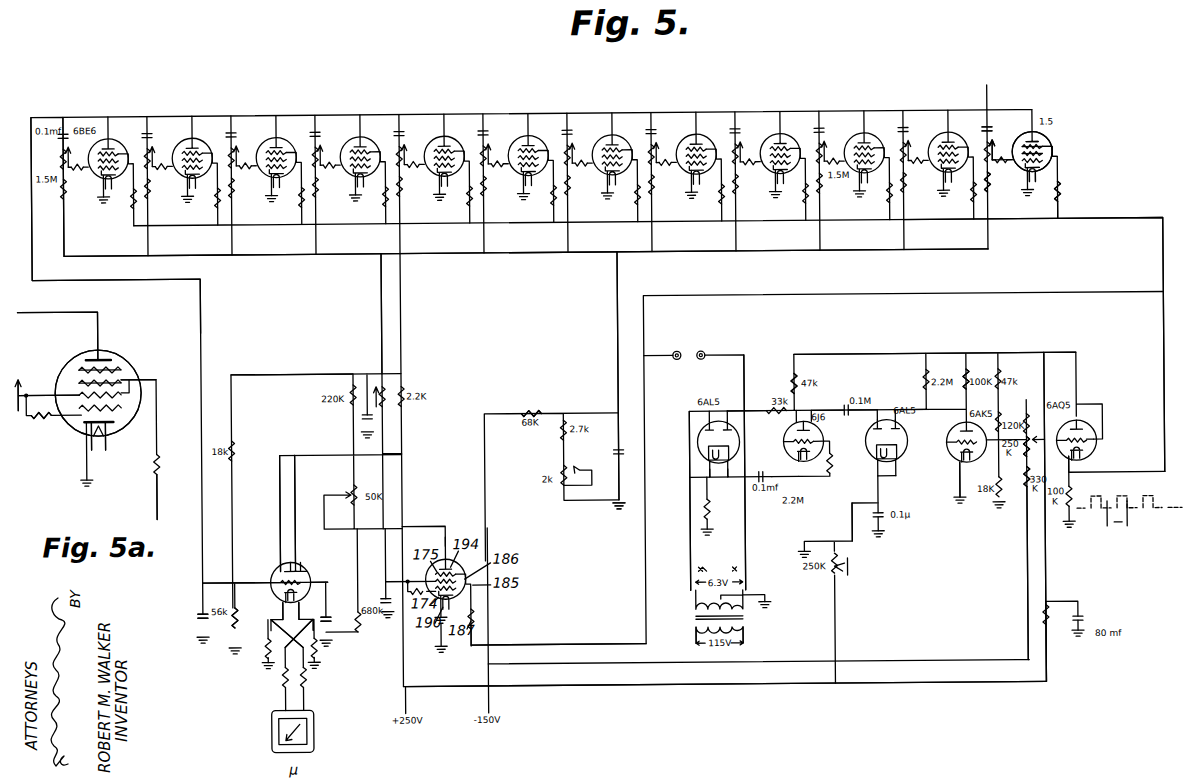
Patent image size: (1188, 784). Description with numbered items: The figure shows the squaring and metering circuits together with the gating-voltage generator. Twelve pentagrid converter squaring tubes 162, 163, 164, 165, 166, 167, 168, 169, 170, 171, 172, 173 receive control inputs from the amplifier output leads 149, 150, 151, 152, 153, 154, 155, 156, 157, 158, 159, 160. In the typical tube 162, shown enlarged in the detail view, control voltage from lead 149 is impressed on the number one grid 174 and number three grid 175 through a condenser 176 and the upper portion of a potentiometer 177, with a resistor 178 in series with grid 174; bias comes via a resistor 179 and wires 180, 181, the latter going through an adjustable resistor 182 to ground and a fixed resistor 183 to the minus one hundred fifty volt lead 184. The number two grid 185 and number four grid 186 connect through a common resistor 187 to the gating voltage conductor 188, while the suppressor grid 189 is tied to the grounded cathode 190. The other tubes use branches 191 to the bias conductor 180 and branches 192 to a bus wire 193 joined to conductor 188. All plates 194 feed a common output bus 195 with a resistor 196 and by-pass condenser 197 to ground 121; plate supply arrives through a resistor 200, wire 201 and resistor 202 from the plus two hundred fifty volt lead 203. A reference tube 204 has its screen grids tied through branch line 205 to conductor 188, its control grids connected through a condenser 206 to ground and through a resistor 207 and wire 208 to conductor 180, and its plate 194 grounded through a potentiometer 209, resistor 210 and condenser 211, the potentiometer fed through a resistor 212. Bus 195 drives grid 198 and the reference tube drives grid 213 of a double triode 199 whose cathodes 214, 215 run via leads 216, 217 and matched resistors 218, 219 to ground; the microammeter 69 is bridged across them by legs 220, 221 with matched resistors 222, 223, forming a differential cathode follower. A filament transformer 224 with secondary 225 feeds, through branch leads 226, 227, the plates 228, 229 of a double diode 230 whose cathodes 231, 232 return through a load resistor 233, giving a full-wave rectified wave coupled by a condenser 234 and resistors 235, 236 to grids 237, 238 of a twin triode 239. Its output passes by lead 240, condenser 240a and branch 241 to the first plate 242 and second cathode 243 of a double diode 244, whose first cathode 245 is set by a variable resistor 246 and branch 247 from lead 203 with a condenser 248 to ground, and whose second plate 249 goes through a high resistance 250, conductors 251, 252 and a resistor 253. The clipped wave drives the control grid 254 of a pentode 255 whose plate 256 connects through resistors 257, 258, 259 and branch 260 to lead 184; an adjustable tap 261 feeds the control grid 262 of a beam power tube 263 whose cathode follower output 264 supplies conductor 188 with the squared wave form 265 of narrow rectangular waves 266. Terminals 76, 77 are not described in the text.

In FIG. 5, the amplifier output lead 160 is at (64, 113).
In FIG. 5, the common output bus 195 is at (76, 113).
In FIG. 5A, the common output bus 195 is at (78, 312).
In FIG. 5, the pentagrid squaring tube 173 is at (108, 135).
In FIG. 5, the amplifier output lead 159 is at (148, 113).
In FIG. 5, the pentagrid squaring tube 172 is at (197, 135).
In FIG. 5, the amplifier output lead 158 is at (232, 113).
In FIG. 5, the pentagrid squaring tube 171 is at (281, 135).
In FIG. 5, the amplifier output lead 157 is at (316, 113).
In FIG. 5, the pentagrid squaring tube 170 is at (365, 135).
In FIG. 5, the amplifier output lead 156 is at (400, 113).
In FIG. 5, the pentagrid squaring tube 169 is at (449, 135).
In FIG. 5, the amplifier output lead 155 is at (484, 113).
In FIG. 5, the pentagrid squaring tube 168 is at (533, 135).
In FIG. 5, the amplifier output lead 154 is at (568, 113).
In FIG. 5, the pentagrid squaring tube 167 is at (617, 135).
In FIG. 5, the amplifier output lead 153 is at (652, 113).
In FIG. 5, the pentagrid squaring tube 166 is at (701, 135).
In FIG. 5, the amplifier output lead 152 is at (736, 113).
In FIG. 5, the pentagrid squaring tube 165 is at (785, 135).
In FIG. 5, the amplifier output lead 151 is at (820, 113).
In FIG. 5, the pentagrid squaring tube 164 is at (869, 135).
In FIG. 5, the amplifier output lead 150 is at (904, 113).
In FIG. 5, the pentagrid squaring tube 163 is at (953, 135).
In FIG. 5, the amplifier output lead 149 is at (990, 95).
In FIG. 5, the condenser 176 is at (1010, 126).
In FIG. 5, the potentiometer 177 is at (988, 120).
In FIG. 5, the suppressor grid 189 is at (1040, 145).
In FIG. 5A, the suppressor grid 189 is at (80, 370).
In FIG. 5, the number four grid 186 is at (1046, 150).
In FIG. 5A, the number four grid 186 is at (76, 382).
In FIG. 5, the pentagrid squaring tube 162 is at (1048, 140).
In FIG. 5A, the pentagrid squaring tube 162 is at (128, 364).
In FIG. 5, the number two grid 185 is at (1058, 157).
In FIG. 5A, the number two grid 185 is at (122, 404).
In FIG. 5, the number one grid 174 is at (1042, 170).
In FIG. 5A, the number one grid 174 is at (138, 424).
In FIG. 5, the common resistor 187 is at (1063, 192).
In FIG. 5A, the common resistor 187 is at (160, 462).
In FIG. 5, the gating voltage conductor 188 is at (1062, 210).
In FIG. 5A, the gating voltage conductor 188 is at (160, 504).
In FIG. 5, the resistor 178 is at (1003, 166).
In FIG. 5A, the resistor 178 is at (42, 420).
In FIG. 5, the resistor 179 is at (994, 190).
In FIG. 5, the cathode 190 is at (1035, 188).
In FIG. 5A, the cathode 190 is at (88, 430).
In FIG. 5, the number three grid 175 is at (996, 148).
In FIG. 5A, the number three grid 175 is at (70, 394).
In FIG. 5, the plate 194 is at (1030, 143).
In FIG. 5A, the plate 194 is at (90, 356).
In FIG. 5, the branch 191 is at (914, 185).
In FIG. 5, the branch 192 is at (974, 200).
In FIG. 5, the bus wire 193 is at (930, 222).
In FIG. 5, the common bias voltage conductor 180 is at (706, 252).
In FIG. 5, the wire 181 is at (617, 340).
In FIG. 5, the wire 208 is at (383, 340).
In FIG. 5, the resistor 207 is at (388, 385).
In FIG. 5, the second resistor 202 is at (403, 388).
In FIG. 5, the wire 201 is at (262, 375).
In FIG. 5, the resistor 212 is at (348, 390).
In FIG. 5, the resistor 200 is at (233, 445).
In FIG. 5, the potentiometer 209 is at (348, 490).
In FIG. 5, the fixed resistor 183 is at (538, 412).
In FIG. 5, the adjustable resistor 182 is at (570, 468).
In FIG. 5, the ground 121 is at (615, 508).
In FIG. 5, the grid 198 is at (270, 580).
In FIG. 5, the double triode tube 199 is at (292, 565).
In FIG. 5, the second grid 213 is at (304, 570).
In FIG. 5, the cathode 214 is at (270, 586).
In FIG. 5, the cathode 215 is at (312, 584).
In FIG. 5, the lead 216 is at (279, 598).
In FIG. 5, the lead 217 is at (300, 598).
In FIG. 5, the resistor 210 is at (356, 620).
In FIG. 5, the condenser 206 is at (378, 592).
In FIG. 5, the condenser 211 is at (326, 625).
In FIG. 5, the +250 volt output lead 203 is at (400, 668).
In FIG. 5, the matched resistor 218 is at (265, 660).
In FIG. 5, the matched resistor 219 is at (311, 660).
In FIG. 5, the conducting leg 220 is at (279, 675).
In FIG. 5, the conducting leg 221 is at (303, 672).
In FIG. 5, the matched resistor 222 is at (278, 680).
In FIG. 5, the matched resistor 223 is at (303, 682).
In FIG. 5, the microammeter 69 is at (310, 730).
In FIG. 5, the resistor 196 is at (230, 630).
In FIG. 5, the by-pass condenser 197 is at (198, 613).
In FIG. 5, the reference tube 204 is at (462, 562).
In FIG. 5, the -150 volt lead 184 is at (485, 612).
In FIG. 5, the branch line 205 is at (560, 648).
In FIG. 5, the plate 228 is at (700, 432).
In FIG. 5, the cathode 231 is at (705, 440).
In FIG. 5, the branch lead 226 is at (688, 488).
In FIG. 5, the plate 229 is at (740, 424).
In FIG. 5, the double diode tube 230 is at (745, 414).
In FIG. 5, the cathode 232 is at (740, 490).
In FIG. 5, the load resistor 233 is at (712, 512).
In FIG. 5, the branch lead 227 is at (745, 558).
In FIG. 5, the grid 237 is at (792, 430).
In FIG. 5, the resistor 235 is at (790, 444).
In FIG. 5, the condenser 234 is at (762, 476).
In FIG. 5, the resistor 236 is at (828, 480).
In FIG. 5, the twin triode tube 239 is at (820, 428).
In FIG. 5, the grid 238 is at (815, 445).
In FIG. 5, the first cathode 245 is at (876, 450).
In FIG. 5, the lead 240 is at (797, 392).
In FIG. 5, the condenser 240a is at (858, 372).
In FIG. 5, the first plate 242 is at (878, 420).
In FIG. 5, the second plate 249 is at (896, 420).
In FIG. 5, the high resistance 250 is at (916, 384).
In FIG. 5, the second double diode 244 is at (898, 446).
In FIG. 5, the second cathode 243 is at (896, 472).
In FIG. 5, the branch 241 is at (878, 484).
In FIG. 5, the variable resistor 246 is at (850, 548).
In FIG. 5, the condenser 248 is at (880, 526).
In FIG. 5, the conductor 251 is at (942, 356).
In FIG. 5, the plate 256 is at (965, 396).
In FIG. 5, the pentode wave-squaring and amplifying tube 255 is at (945, 436).
In FIG. 5, the control grid 254 is at (958, 468).
In FIG. 5, the resistor 257 is at (1034, 440).
In FIG. 5, the resistor 258 is at (1025, 462).
In FIG. 5, the resistor 259 is at (1020, 490).
In FIG. 5, the branch 260 is at (1022, 562).
In FIG. 5, the adjustable tap 261 is at (1044, 420).
In FIG. 5, the beam power tube 263 is at (1084, 420).
In FIG. 5, the control grid 262 is at (1092, 446).
In FIG. 5, the cathode follower output connection 264 is at (1072, 465).
In FIG. 5, the narrow rectangular waves 266 is at (1112, 506).
In FIG. 5, the wave form 265 is at (1106, 518).
In FIG. 5, the conductor 252 is at (1048, 590).
In FIG. 5, the second resistor 253 is at (1046, 632).
In FIG. 5, the secondary winding 225 is at (693, 607).
In FIG. 5, the filament transformer 224 is at (745, 625).
In FIG. 5, the power lead 76 is at (691, 636).
In FIG. 5, the power lead 77 is at (744, 642).
In FIG. 5, the branch 247 is at (680, 685).